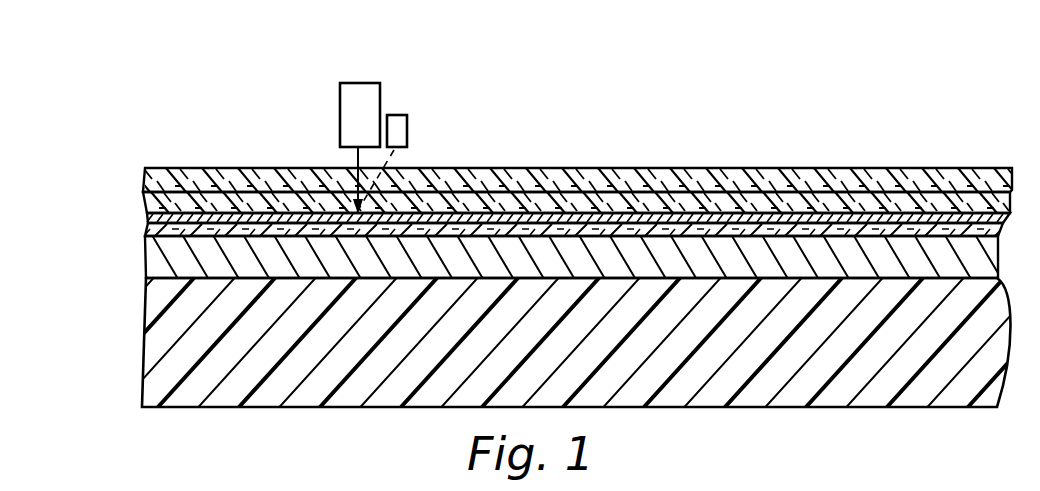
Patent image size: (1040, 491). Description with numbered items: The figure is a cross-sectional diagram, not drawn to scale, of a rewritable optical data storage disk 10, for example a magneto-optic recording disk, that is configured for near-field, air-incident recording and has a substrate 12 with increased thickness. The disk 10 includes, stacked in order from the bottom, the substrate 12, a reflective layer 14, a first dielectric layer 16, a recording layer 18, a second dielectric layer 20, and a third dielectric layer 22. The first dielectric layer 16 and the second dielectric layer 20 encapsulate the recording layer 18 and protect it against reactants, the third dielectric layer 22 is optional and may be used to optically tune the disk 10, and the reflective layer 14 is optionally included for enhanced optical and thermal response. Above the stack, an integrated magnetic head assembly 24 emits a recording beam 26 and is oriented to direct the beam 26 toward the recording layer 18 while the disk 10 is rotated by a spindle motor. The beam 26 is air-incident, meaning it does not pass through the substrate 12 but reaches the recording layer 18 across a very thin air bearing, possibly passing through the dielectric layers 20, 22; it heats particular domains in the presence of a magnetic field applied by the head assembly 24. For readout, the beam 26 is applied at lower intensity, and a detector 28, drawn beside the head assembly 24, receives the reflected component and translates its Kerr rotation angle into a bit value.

The rewritable optical data storage disk 10 is at (243, 119).
The substrate 12 is at (146, 314).
The reflective layer 14 is at (146, 258).
The first dielectric layer 16 is at (147, 231).
The recording layer 18 is at (147, 220).
The second dielectric layer 20 is at (146, 201).
The third dielectric layer 22 is at (144, 176).
The integrated magnetic head assembly 24 is at (365, 83).
The recording beam 26 is at (355, 158).
The detector 28 is at (408, 124).